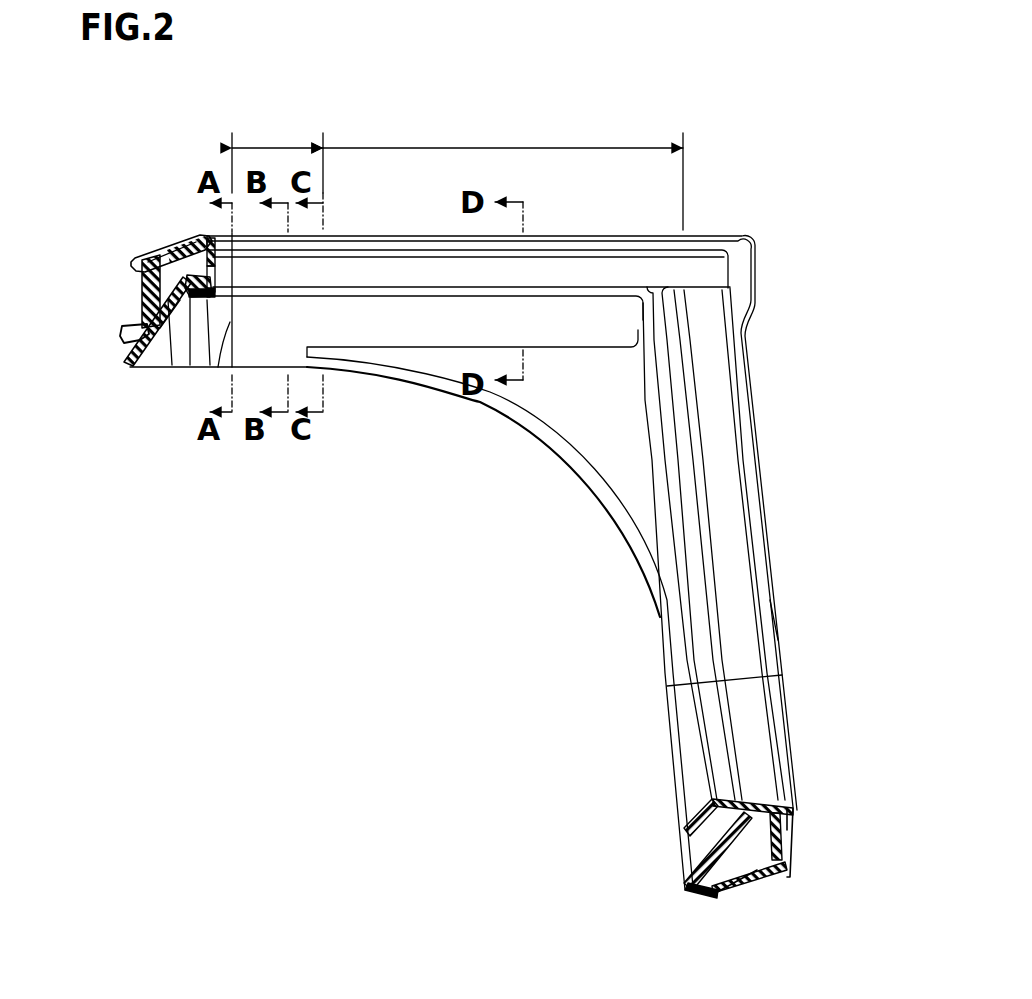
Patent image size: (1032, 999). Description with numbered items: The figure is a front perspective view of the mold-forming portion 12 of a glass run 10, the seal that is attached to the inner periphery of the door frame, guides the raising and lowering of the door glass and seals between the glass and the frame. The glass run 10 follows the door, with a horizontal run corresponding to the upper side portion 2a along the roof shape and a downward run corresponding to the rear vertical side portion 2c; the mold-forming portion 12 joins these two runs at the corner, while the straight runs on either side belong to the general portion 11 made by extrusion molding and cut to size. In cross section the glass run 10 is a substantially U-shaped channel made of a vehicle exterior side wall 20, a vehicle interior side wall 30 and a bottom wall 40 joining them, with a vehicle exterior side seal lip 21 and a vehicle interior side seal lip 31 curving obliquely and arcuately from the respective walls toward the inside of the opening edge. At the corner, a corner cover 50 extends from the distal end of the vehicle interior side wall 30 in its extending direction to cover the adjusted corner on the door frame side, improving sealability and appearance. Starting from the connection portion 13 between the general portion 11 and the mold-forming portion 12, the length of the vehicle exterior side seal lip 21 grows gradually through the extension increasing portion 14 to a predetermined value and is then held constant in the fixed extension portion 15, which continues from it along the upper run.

The glass run 10 is at (486, 412).
The general portion 11 is at (142, 340).
The mold-forming portion 12 is at (763, 463).
The connection portion 13 is at (200, 370).
The extension increasing portion 14 is at (278, 142).
The fixed extension portion 15 is at (518, 145).
The vehicle exterior side wall 20 is at (307, 270).
The vehicle exterior side seal lip 21 is at (188, 345).
The vehicle interior side wall 30 is at (142, 292).
The vehicle interior side seal lip 31 is at (170, 345).
The bottom wall 40 is at (187, 257).
The corner cover 50 is at (595, 417).
The upper side portion 2a is at (207, 237).
The rear vertical side portion 2c is at (778, 633).